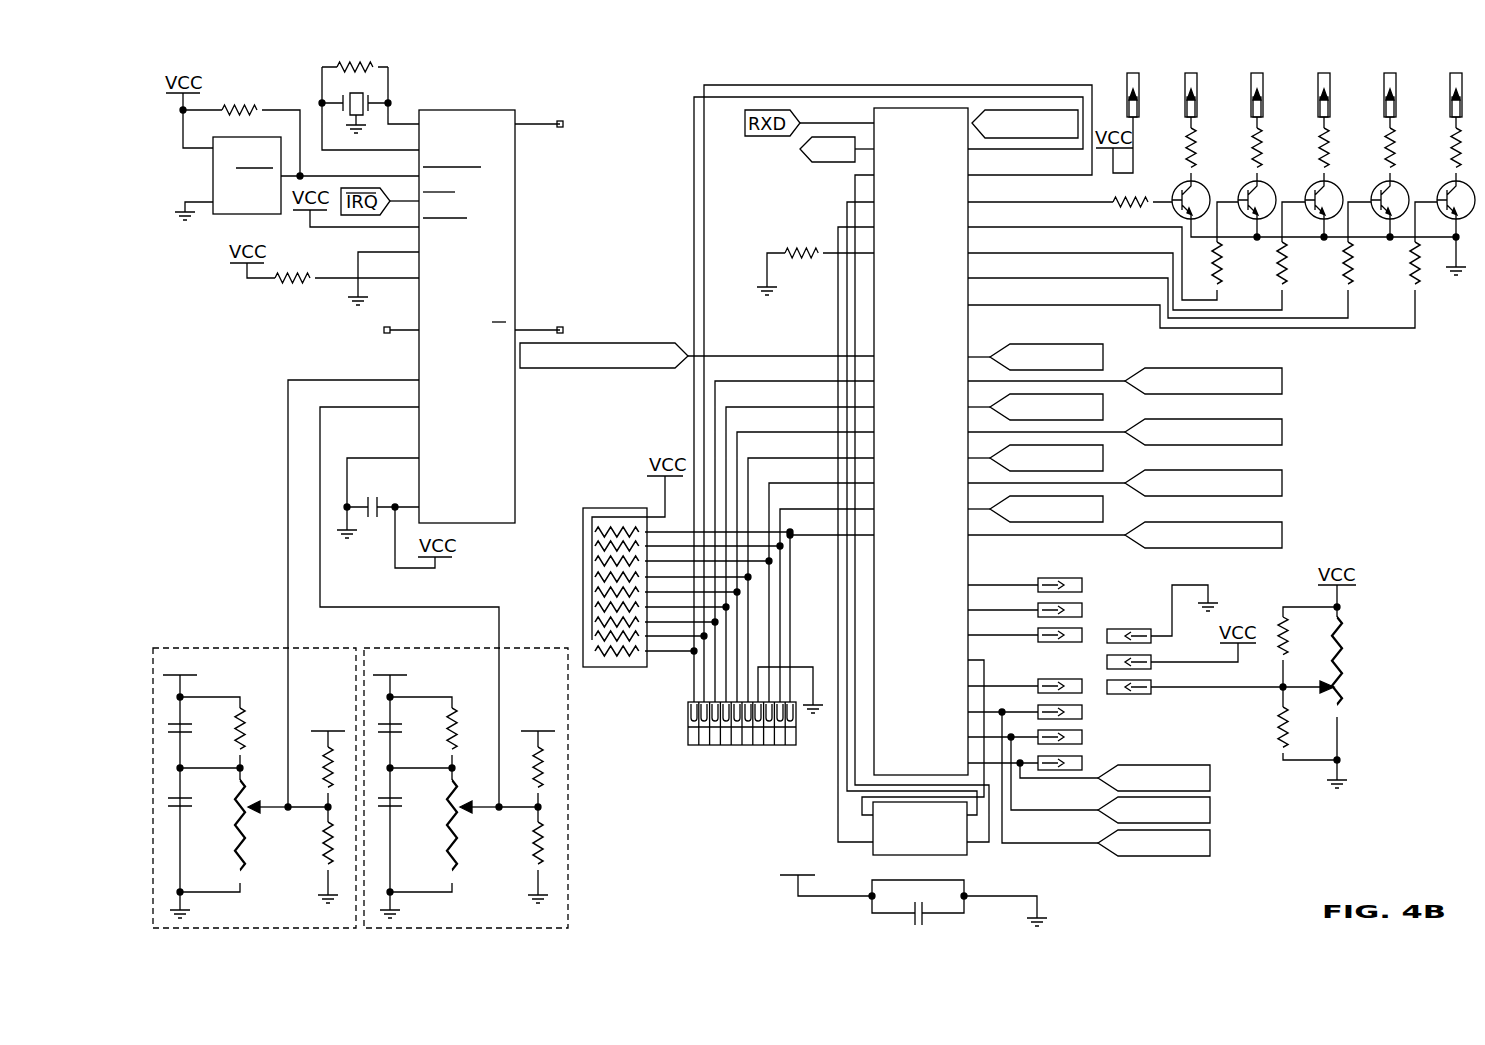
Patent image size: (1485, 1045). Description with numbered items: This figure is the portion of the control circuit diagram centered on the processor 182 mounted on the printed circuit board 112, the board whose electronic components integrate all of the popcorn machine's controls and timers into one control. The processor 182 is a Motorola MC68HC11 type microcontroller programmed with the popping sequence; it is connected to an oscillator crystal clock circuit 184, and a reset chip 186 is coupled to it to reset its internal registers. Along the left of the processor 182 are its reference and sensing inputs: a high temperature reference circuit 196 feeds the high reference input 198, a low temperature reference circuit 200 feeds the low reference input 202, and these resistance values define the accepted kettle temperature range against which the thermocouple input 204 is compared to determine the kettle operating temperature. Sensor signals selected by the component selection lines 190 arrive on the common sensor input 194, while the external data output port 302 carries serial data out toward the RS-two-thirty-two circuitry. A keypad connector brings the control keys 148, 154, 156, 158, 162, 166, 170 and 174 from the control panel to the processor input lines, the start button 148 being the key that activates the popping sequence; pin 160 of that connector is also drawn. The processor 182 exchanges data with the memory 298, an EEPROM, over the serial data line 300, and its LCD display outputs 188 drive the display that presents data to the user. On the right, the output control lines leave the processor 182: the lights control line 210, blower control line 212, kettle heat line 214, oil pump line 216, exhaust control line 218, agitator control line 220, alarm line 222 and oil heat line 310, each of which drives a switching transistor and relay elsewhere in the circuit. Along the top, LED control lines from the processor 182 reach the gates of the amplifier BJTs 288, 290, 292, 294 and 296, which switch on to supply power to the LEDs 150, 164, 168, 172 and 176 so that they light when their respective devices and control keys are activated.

The printed circuit board 112 is at (634, 140).
The processor 182 is at (489, 110).
The oscillator crystal clock circuit 184 is at (388, 64).
The reset chip 186 is at (213, 190).
The high reference input 198 is at (378, 380).
The low reference input 202 is at (386, 407).
The high temperature reference circuit 196 is at (208, 650).
The low temperature reference circuit 200 is at (386, 650).
The thermocouple input 204 is at (596, 343).
The external data output port 302 is at (866, 151).
The common sensor input 194 is at (1033, 138).
The LED 176 is at (1185, 98).
The LED 164 is at (1251, 98).
The LED 172 is at (1318, 98).
The LED 168 is at (1384, 98).
The LED 150 is at (1450, 98).
The amplifier BJT 296 is at (1178, 185).
The amplifier BJT 290 is at (1244, 185).
The amplifier BJT 294 is at (1311, 185).
The amplifier BJT 292 is at (1377, 185).
The amplifier BJT 288 is at (1443, 185).
The alarm line 222 is at (1104, 360).
The kettle heat line 214 is at (1284, 384).
The agitator control line 220 is at (1104, 410).
The exhaust control line 218 is at (1284, 435).
The oil pump line 216 is at (1104, 461).
The blower control line 212 is at (1284, 486).
The lights control line 210 is at (1104, 512).
The oil heat line 310 is at (1284, 538).
The serial data line 300 is at (986, 672).
The LCD display outputs 188 is at (1034, 757).
The component selection lines 190 is at (1150, 856).
The memory 298 is at (965, 858).
The control key 174 is at (722, 761).
The control key 162 is at (694, 745).
The control key 170 is at (704, 745).
The control key 166 is at (715, 745).
The control key 156 is at (726, 745).
The control key 154 is at (737, 745).
The control key 158 is at (748, 745).
The start button 148 is at (769, 745).
The key input 160 is at (780, 745).